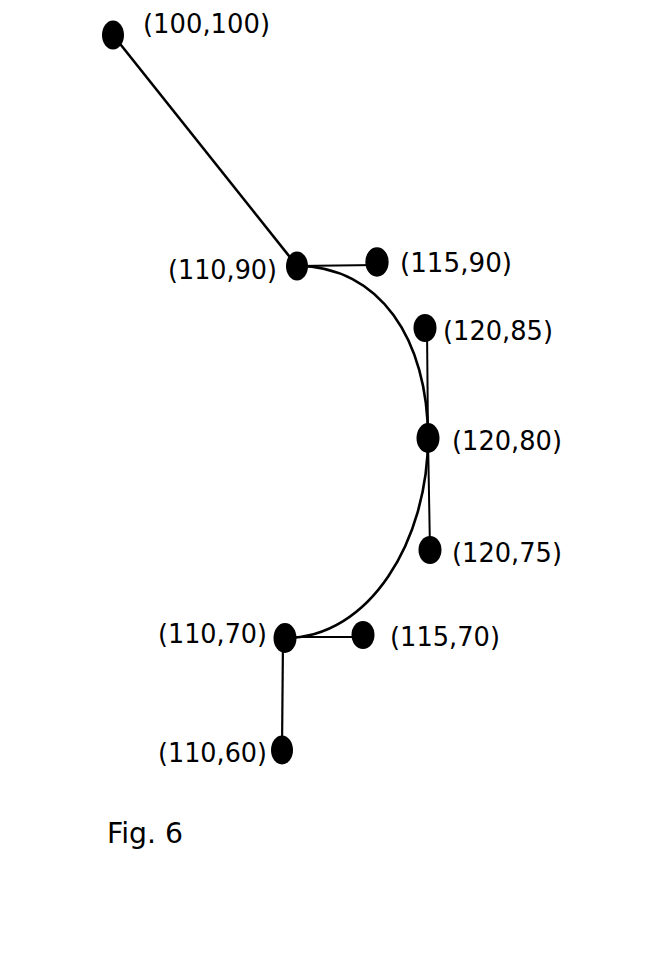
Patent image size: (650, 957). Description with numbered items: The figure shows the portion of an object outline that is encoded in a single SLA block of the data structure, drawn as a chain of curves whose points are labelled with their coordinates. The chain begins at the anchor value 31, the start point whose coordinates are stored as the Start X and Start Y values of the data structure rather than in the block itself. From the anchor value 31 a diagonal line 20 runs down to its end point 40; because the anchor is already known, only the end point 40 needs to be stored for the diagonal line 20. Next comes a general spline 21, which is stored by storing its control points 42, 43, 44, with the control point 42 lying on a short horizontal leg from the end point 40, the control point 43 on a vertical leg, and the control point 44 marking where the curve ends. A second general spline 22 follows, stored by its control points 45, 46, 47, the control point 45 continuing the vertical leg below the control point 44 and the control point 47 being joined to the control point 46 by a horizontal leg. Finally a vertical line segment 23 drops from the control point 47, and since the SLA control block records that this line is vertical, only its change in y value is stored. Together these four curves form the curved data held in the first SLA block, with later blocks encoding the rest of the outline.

The anchor value 31 is at (101, 36).
The diagonal line 20 is at (199, 135).
The end point 40 is at (294, 253).
The control point 42 is at (377, 248).
The general spline 21 is at (395, 314).
The control point 43 is at (427, 315).
The control point 44 is at (417, 436).
The control point 45 is at (419, 546).
The general spline 22 is at (392, 562).
The control point 47 is at (281, 623).
The control point 46 is at (362, 650).
The vertical line segment 23 is at (281, 700).